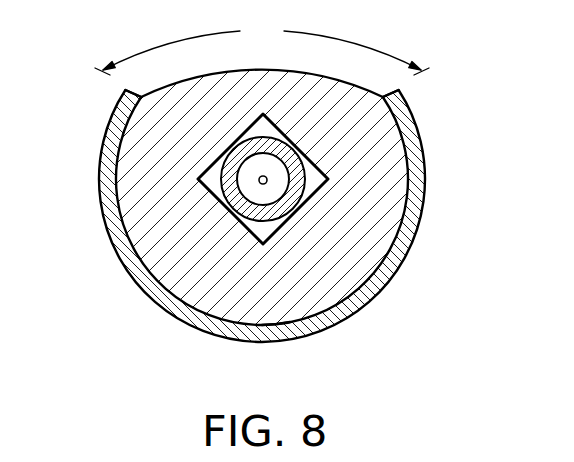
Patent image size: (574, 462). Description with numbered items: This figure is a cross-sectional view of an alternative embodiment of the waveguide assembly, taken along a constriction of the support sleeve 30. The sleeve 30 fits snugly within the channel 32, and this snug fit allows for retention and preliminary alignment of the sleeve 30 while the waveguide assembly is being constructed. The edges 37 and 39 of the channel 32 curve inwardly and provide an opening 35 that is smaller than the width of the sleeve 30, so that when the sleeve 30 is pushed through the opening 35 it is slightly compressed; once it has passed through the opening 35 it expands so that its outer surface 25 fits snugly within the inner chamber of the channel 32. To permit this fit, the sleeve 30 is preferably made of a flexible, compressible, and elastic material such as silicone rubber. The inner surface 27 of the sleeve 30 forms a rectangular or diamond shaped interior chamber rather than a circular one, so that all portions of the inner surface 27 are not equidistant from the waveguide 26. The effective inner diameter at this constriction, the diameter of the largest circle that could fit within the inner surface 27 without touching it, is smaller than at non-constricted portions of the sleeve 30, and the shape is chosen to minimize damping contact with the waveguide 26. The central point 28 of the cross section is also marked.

The outer surface 25 is at (313, 87).
The waveguide 26 is at (250, 169).
The inner surface 27 is at (253, 133).
The central axis 28 is at (268, 180).
The support sleeve 30 is at (292, 309).
The channel 32 is at (383, 280).
The opening 35 is at (262, 46).
The edge 37 is at (137, 95).
The edge 39 is at (393, 91).